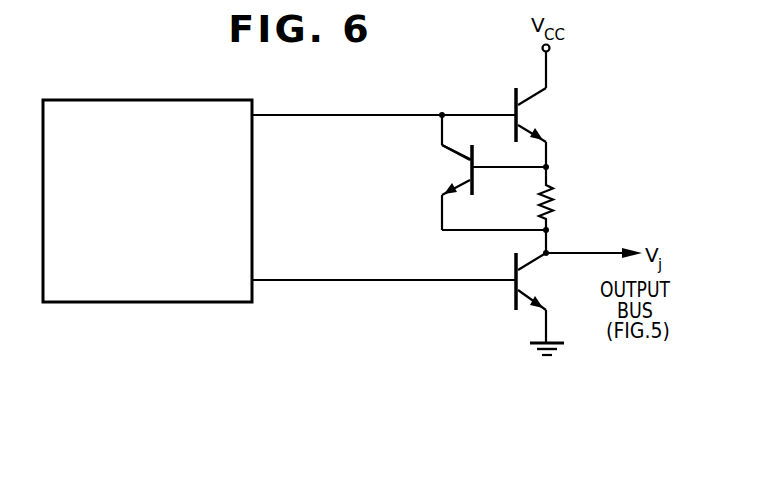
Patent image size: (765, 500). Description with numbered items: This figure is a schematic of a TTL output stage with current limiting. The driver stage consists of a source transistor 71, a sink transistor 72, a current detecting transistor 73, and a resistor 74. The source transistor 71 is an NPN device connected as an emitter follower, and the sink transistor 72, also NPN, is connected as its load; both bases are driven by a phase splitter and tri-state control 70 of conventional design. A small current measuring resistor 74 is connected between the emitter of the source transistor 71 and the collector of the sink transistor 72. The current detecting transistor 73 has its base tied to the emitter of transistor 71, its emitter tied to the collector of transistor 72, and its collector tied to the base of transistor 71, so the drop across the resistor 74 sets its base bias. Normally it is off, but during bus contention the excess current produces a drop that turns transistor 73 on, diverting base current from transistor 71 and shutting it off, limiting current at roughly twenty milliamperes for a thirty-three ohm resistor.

The phase splitter and tri-state control 70 is at (117, 100).
The source transistor 71 is at (514, 97).
The sink transistor 72 is at (516, 263).
The current detecting transistor 73 is at (474, 187).
The current measuring resistor 74 is at (553, 204).